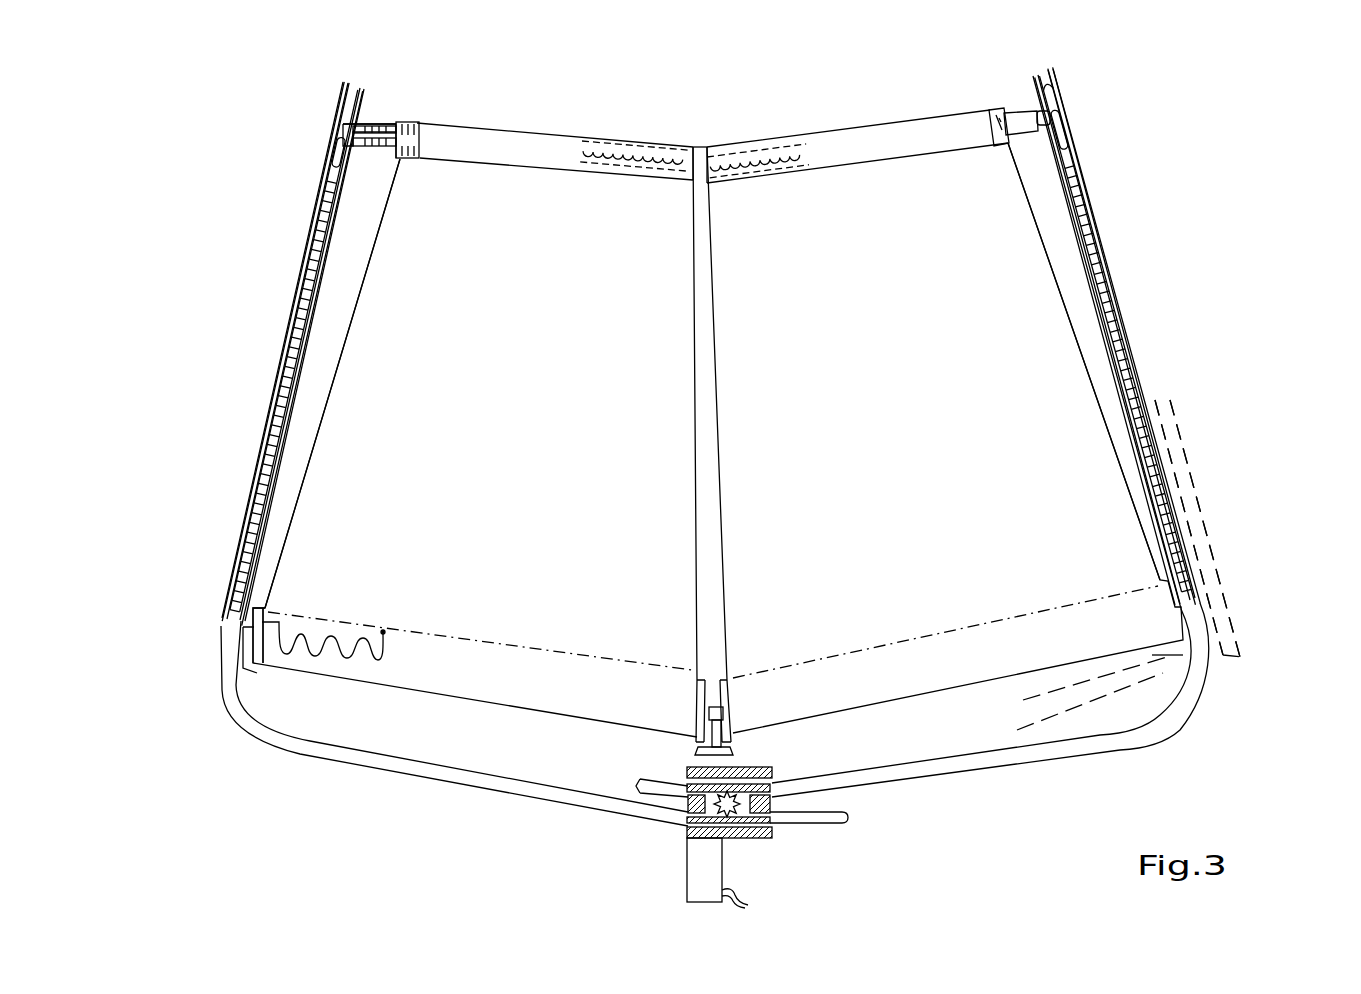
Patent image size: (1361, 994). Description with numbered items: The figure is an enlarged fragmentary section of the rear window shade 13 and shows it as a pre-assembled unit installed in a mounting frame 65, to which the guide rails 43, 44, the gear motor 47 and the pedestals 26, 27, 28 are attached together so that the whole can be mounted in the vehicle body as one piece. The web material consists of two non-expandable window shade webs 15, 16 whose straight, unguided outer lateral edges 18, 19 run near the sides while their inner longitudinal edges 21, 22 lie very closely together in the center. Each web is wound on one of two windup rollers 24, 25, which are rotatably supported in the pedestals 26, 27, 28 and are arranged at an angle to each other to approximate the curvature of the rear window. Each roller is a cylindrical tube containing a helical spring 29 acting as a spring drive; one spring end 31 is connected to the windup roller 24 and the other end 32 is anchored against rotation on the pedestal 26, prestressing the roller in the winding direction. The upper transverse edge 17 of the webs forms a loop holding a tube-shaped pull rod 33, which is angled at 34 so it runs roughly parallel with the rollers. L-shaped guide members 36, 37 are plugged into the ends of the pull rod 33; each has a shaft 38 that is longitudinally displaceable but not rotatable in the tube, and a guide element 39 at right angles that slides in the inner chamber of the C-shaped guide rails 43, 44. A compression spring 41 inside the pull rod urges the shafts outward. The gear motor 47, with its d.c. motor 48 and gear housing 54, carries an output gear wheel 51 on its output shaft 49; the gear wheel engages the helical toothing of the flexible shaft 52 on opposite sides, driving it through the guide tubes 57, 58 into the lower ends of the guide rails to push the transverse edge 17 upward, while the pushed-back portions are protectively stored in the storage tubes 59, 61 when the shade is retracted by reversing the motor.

The rear window shade 13 is at (1180, 148).
The window shade web 15 is at (541, 419).
The window shade web 16 is at (908, 409).
The upper transverse edge 17 is at (537, 130).
The outer lateral edge 18 is at (363, 293).
The outer lateral edge 19 is at (1047, 268).
The inner longitudinal edge 21 is at (690, 307).
The inner longitudinal edge 22 is at (713, 338).
The windup roller 24 is at (530, 640).
The windup roller 25 is at (922, 633).
The pedestal 26 is at (257, 673).
The pedestal 27 is at (722, 740).
The pedestal 28 is at (1153, 657).
The helical spring 29 is at (323, 637).
The spring end 31 is at (383, 632).
The spring end 32 is at (273, 612).
The pull rod 33 is at (402, 140).
The angle of pull rod 34 is at (700, 147).
The guide member 36 is at (360, 166).
The guide member 37 is at (1040, 146).
The shaft 38 is at (375, 126).
The guide element 39 is at (325, 153).
The compression spring 41 is at (658, 172).
The guide rail 43 is at (267, 354).
The guide rail 44 is at (1133, 337).
The gear motor 47 is at (741, 817).
The d.c. motor 48 is at (718, 863).
The output shaft 49 is at (687, 770).
The output gear wheel 51 is at (773, 813).
The SU flex shaft 52 is at (1187, 543).
The gear housing 54 is at (773, 837).
The first guide tube 57 is at (403, 767).
The second guide tube 58 is at (1033, 757).
The storage tube 59 is at (847, 817).
The storage tube 61 is at (637, 785).
The mounting frame 65 is at (1245, 645).